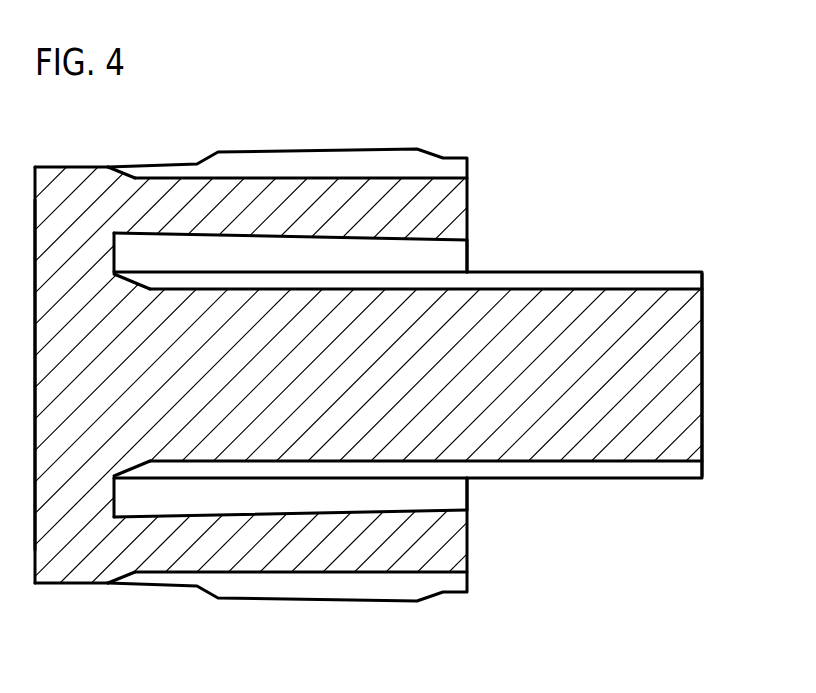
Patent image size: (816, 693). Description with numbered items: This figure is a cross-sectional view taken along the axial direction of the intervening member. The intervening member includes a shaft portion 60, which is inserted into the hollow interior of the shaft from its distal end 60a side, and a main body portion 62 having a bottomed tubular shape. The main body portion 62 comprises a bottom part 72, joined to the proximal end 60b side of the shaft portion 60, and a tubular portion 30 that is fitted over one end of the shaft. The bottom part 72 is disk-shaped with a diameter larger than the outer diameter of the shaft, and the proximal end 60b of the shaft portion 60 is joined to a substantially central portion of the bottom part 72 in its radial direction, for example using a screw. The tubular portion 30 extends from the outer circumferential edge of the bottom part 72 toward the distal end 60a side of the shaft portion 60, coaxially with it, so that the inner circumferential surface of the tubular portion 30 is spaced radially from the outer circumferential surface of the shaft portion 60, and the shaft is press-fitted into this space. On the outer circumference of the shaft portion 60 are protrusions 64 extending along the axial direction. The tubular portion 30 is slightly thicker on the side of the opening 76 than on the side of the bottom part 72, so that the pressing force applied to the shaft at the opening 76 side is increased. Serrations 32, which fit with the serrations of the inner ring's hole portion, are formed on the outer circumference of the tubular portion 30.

The tubular portion 30 is at (163, 548).
The serrations 32 is at (388, 165).
The shaft portion 60 is at (532, 315).
The distal end 60a is at (702, 307).
The proximal end 60b is at (127, 282).
The main body portion 62 is at (65, 640).
The protrusions 64 is at (614, 283).
The bottom part 72 is at (80, 548).
The opening 76 is at (465, 498).